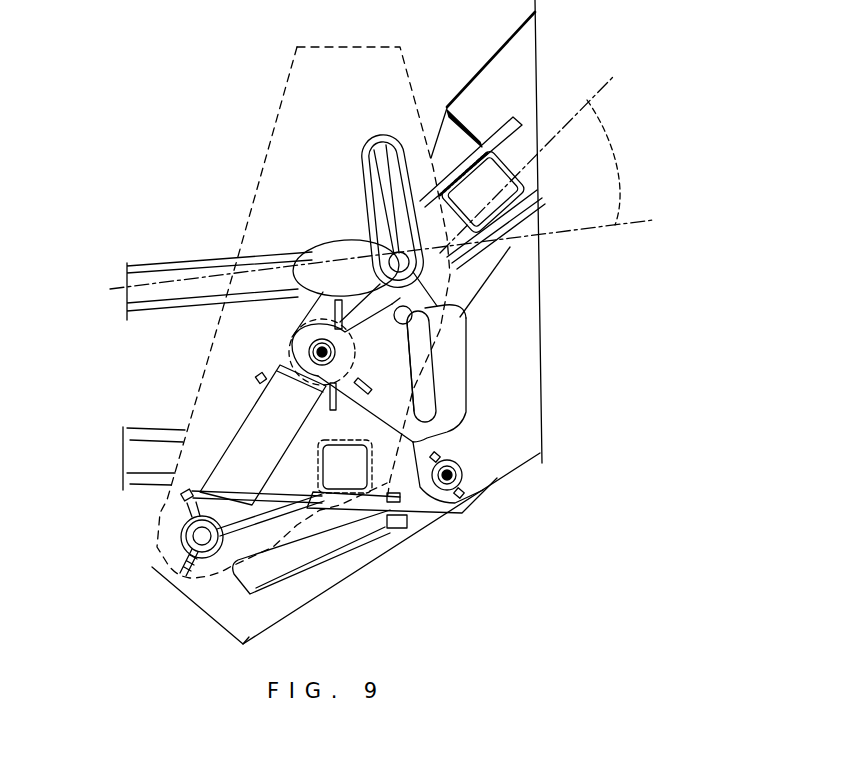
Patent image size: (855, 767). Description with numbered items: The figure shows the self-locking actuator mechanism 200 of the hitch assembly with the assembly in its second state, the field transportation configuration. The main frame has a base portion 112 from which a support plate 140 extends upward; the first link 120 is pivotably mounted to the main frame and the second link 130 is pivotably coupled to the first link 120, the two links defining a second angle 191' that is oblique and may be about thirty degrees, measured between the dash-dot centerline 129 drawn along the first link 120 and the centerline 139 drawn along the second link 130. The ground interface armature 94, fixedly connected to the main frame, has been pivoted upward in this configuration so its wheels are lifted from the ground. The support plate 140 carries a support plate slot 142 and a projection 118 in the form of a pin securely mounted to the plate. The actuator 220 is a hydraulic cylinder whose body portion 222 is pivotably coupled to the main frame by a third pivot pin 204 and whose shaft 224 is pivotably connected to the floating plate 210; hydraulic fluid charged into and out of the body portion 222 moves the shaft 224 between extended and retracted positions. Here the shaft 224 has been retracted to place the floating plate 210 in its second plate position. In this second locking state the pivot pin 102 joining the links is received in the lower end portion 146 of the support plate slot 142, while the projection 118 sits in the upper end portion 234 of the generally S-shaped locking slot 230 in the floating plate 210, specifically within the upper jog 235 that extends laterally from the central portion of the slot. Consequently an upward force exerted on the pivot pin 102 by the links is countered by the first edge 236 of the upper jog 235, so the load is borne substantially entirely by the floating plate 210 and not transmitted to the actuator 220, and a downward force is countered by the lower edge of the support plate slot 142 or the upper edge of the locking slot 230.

The armature 94 is at (528, 424).
The pivot pin 102 is at (391, 255).
The base portion 112 is at (129, 460).
The projection 118 is at (394, 315).
The first link 120 is at (158, 264).
The rail axis 129 is at (643, 223).
The second link 130 is at (512, 122).
The bracket axis 139 is at (613, 75).
The support plate 140 is at (279, 110).
The support plate slot 142 is at (362, 160).
The lower end portion 146 is at (362, 257).
The second angle 191' is at (640, 162).
The actuator mechanism 200 is at (280, 316).
The third pivot pin 204 is at (184, 532).
The floating plate 210 is at (466, 383).
The actuator 220 is at (215, 463).
The body portion 222 is at (245, 436).
The shaft 224 is at (297, 354).
The locking slot 230 is at (448, 372).
The upper end portion 234 is at (431, 305).
The upper jog 235 is at (392, 296).
The first edge 236 is at (411, 374).